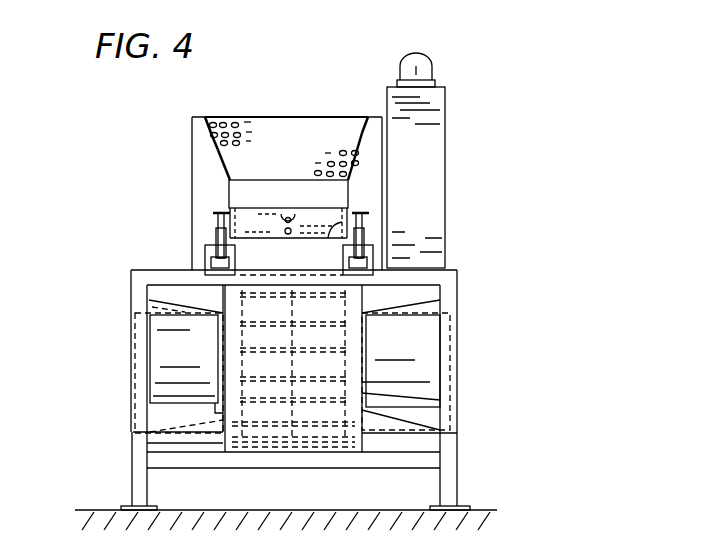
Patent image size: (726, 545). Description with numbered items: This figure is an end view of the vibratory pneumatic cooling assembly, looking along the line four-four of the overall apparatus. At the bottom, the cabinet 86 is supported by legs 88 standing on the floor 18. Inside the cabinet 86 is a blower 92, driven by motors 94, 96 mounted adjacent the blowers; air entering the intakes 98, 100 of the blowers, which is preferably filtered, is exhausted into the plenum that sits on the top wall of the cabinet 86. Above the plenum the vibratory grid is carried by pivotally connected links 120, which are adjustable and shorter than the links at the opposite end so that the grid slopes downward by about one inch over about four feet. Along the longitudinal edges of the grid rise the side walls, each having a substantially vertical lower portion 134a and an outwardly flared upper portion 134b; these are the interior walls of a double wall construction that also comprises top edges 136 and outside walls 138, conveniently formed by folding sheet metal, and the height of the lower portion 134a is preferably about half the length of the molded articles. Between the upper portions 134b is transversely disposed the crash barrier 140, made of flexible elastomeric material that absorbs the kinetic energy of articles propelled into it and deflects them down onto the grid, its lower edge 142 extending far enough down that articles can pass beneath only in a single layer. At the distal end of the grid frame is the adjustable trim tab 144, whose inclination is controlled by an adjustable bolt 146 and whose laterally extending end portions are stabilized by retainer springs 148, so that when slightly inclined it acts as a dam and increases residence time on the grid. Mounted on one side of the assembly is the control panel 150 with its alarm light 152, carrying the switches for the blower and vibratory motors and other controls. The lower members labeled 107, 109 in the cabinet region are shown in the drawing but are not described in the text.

The floor 18 is at (93, 510).
The cabinet 86 is at (131, 285).
The legs 88 is at (137, 482).
The blower 92 is at (223, 443).
The motor 94 is at (465, 368).
The motor 96 is at (157, 358).
The intake 98 is at (190, 310).
The intake 100 is at (433, 311).
The conveyor unit 107 is at (338, 458).
The bottom support bar 109 is at (277, 458).
The links 120 is at (218, 240).
The lower portion of side wall 134a is at (227, 193).
The upper portion of side wall 134b is at (218, 160).
The top edges 136 is at (205, 120).
The outside walls 138 is at (195, 220).
The crash barrier 140 is at (263, 117).
The lower edge of crash barrier 142 is at (270, 180).
The adjustable trim tab 144 is at (321, 218).
The adjustable bolt 146 is at (280, 230).
The retainer springs 148 is at (338, 222).
The control panel 150 is at (445, 100).
The alarm light 152 is at (430, 55).